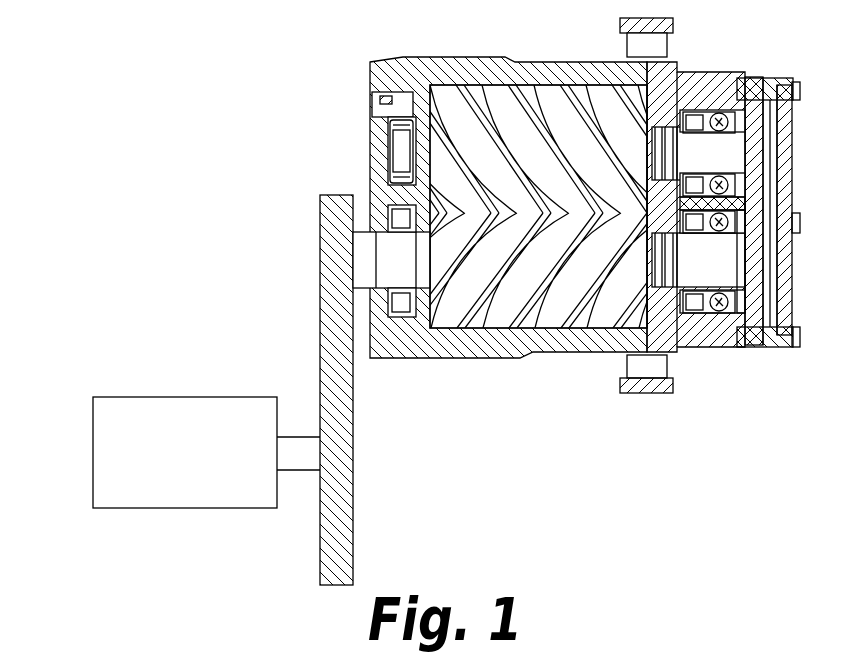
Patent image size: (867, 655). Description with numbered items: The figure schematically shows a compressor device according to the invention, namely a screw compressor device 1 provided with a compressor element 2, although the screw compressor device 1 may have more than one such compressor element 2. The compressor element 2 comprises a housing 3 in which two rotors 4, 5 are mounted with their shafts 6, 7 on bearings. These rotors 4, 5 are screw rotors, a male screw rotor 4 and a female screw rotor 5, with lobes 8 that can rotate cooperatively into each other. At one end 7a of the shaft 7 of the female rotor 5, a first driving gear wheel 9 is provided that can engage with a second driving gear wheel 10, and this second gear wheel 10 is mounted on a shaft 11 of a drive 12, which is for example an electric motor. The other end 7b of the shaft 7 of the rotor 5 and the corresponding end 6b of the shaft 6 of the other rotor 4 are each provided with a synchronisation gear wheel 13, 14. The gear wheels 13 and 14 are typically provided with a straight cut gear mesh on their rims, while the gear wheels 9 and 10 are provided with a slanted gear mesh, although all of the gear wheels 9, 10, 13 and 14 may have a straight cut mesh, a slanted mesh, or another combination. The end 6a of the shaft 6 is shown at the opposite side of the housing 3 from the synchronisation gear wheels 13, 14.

The screw compressor device 1 is at (212, 108).
The compressor element 2 is at (533, 58).
The housing 3 is at (465, 70).
The male screw rotor 4 is at (555, 123).
The female screw rotor 5 is at (480, 313).
The shaft 6 is at (707, 152).
The bearing on inlet side 6a is at (372, 100).
The end of shaft 6b is at (737, 152).
The shaft 7 is at (695, 278).
The end of shaft 7a is at (378, 262).
The other end of shaft 7b is at (735, 270).
The lobes 8 is at (562, 303).
The first driving gear wheel 9 is at (320, 290).
The second driving gear wheel 10 is at (322, 352).
The shaft of drive 11 is at (293, 458).
The drive 12 is at (216, 498).
The synchronisation gear wheel 13 is at (753, 253).
The synchronisation gear wheel 14 is at (767, 140).